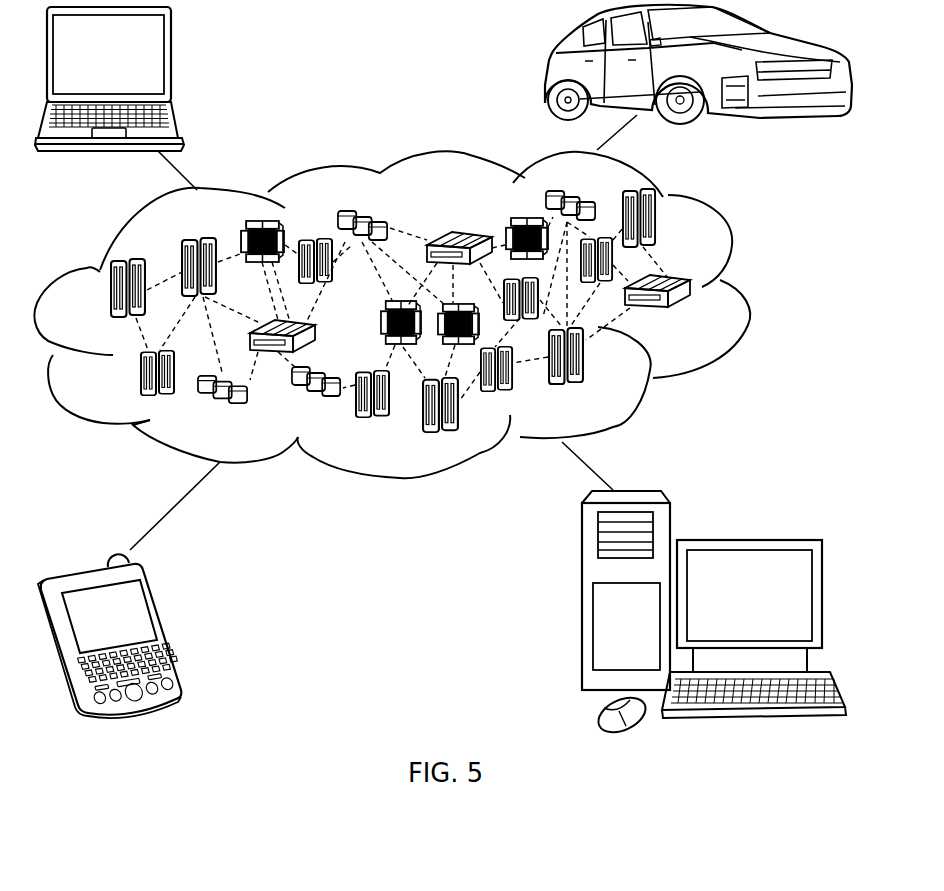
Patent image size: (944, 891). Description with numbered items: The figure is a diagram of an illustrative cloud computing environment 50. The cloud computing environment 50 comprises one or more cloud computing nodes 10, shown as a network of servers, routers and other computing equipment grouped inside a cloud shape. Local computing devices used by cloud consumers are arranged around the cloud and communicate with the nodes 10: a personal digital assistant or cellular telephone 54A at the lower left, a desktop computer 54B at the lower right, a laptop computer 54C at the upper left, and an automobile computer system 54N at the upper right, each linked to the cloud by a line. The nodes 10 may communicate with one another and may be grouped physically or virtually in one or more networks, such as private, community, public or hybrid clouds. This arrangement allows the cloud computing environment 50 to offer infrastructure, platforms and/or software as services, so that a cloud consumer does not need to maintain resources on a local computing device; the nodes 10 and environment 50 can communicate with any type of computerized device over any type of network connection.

The laptop computer 54C is at (172, 62).
The automobile computer system 54N is at (552, 70).
The personal digital assistant or cellular telephone 54A is at (167, 627).
The desktop computer 54B is at (746, 540).
The cloud computing environment 50 is at (746, 289).
The cloud computing node 10 is at (694, 317).